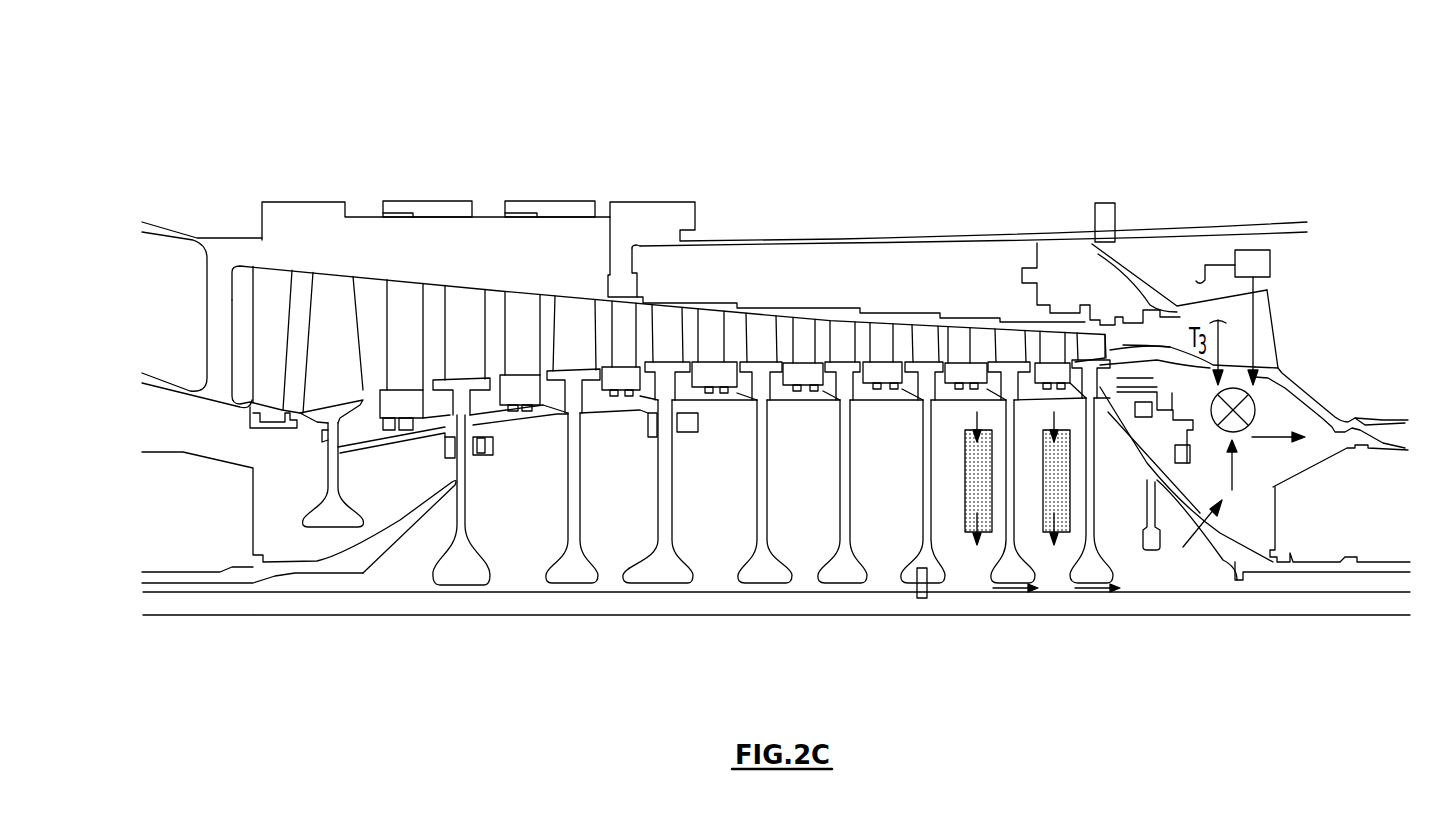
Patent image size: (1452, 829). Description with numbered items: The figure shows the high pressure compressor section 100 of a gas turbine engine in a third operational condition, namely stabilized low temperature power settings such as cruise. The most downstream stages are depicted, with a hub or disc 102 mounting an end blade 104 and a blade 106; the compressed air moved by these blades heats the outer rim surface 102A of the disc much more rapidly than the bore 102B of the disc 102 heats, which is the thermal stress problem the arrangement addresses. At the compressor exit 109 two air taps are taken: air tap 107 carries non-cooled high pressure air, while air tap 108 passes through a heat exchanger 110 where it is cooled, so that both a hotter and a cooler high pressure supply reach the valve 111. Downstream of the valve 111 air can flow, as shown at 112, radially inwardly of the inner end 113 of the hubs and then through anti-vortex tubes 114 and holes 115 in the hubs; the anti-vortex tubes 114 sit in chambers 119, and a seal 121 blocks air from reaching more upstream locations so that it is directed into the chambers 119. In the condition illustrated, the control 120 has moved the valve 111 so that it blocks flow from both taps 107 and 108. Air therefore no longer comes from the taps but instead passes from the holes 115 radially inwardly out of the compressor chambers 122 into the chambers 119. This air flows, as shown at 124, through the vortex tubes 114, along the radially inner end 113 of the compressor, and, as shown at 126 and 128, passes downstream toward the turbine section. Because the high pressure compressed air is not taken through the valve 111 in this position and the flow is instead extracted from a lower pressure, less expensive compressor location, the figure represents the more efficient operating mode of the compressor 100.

The high pressure compressor section 100 is at (553, 160).
The hub or disc 102 is at (1077, 393).
The outer rim surface 102A is at (1073, 398).
The bore 102B is at (1067, 513).
The end blade 104 is at (1097, 403).
The blade 106 is at (1018, 337).
The air tap 107 is at (1247, 348).
The air tap 108 is at (1263, 303).
The compressor exit 109 is at (1263, 327).
The heat exchanger 110 is at (1253, 250).
The valve 111 is at (1257, 412).
The air flow downstream of the valve 112 is at (1107, 292).
The inner end of the hubs 113 is at (1097, 575).
The anti-vortex tube 114 is at (1053, 460).
The hole 115 is at (993, 343).
The chamber 119 is at (947, 520).
The control 120 is at (1145, 418).
The seal 121 is at (920, 590).
The compressor chamber 122 is at (993, 395).
The air flow through vortex tubes 124 is at (1057, 422).
The downstream air flow 126 is at (1183, 537).
The downstream air flow 128 is at (1273, 440).